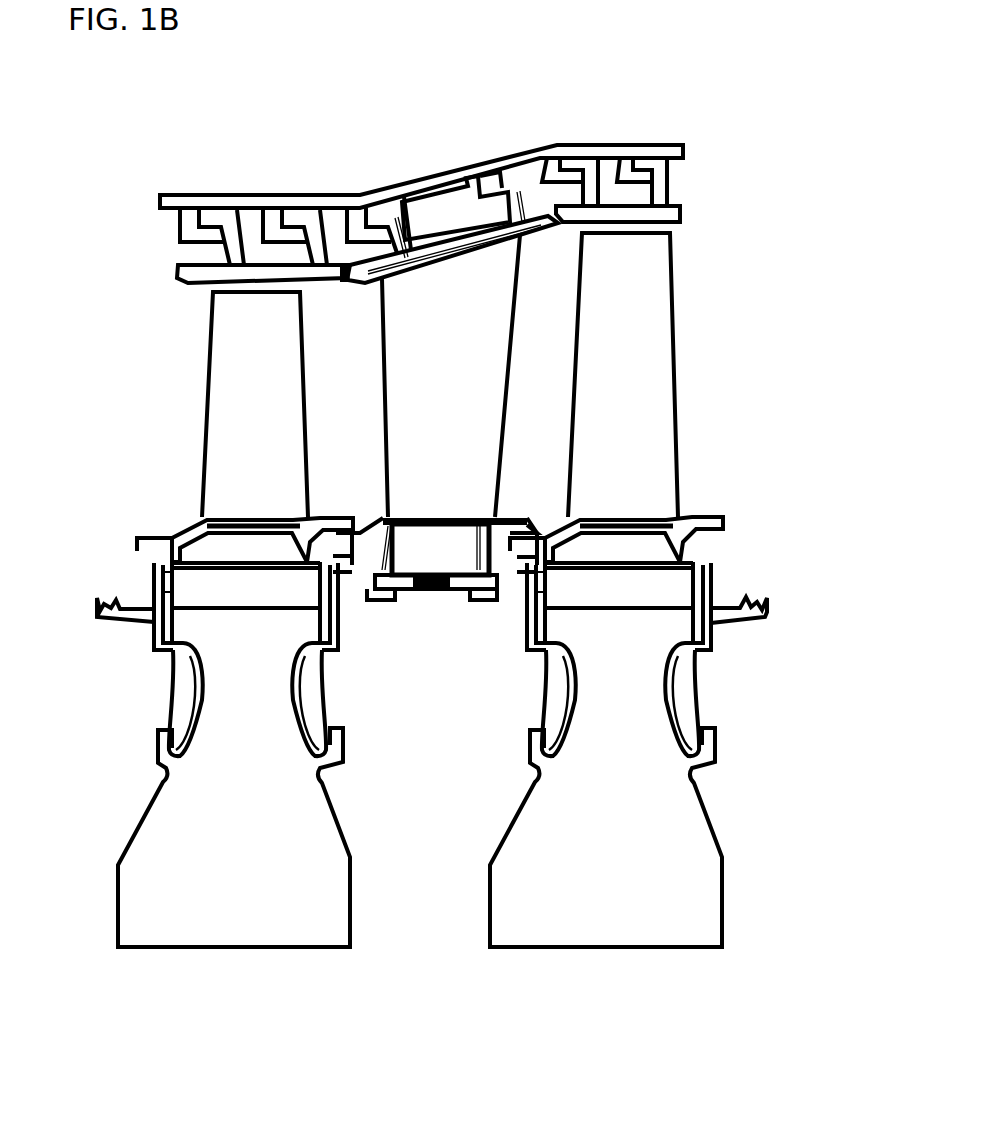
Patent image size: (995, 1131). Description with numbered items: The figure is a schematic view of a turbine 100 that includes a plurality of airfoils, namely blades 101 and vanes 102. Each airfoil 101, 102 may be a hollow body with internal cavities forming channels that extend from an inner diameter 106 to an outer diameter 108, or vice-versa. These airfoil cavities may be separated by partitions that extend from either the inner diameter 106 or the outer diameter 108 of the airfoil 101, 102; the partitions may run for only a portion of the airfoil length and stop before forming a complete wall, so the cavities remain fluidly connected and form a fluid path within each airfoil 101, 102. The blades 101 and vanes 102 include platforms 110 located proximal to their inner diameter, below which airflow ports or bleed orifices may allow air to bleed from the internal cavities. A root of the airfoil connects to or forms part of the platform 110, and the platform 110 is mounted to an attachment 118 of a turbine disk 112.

The turbine 100 is at (55, 139).
The blade 101 is at (287, 368).
The vane 102 is at (493, 338).
The inner diameter 106 is at (379, 502).
The outer diameter 108 is at (185, 304).
The platform 110 is at (515, 512).
The turbine disk 112 is at (318, 858).
The attachment 118 is at (228, 605).